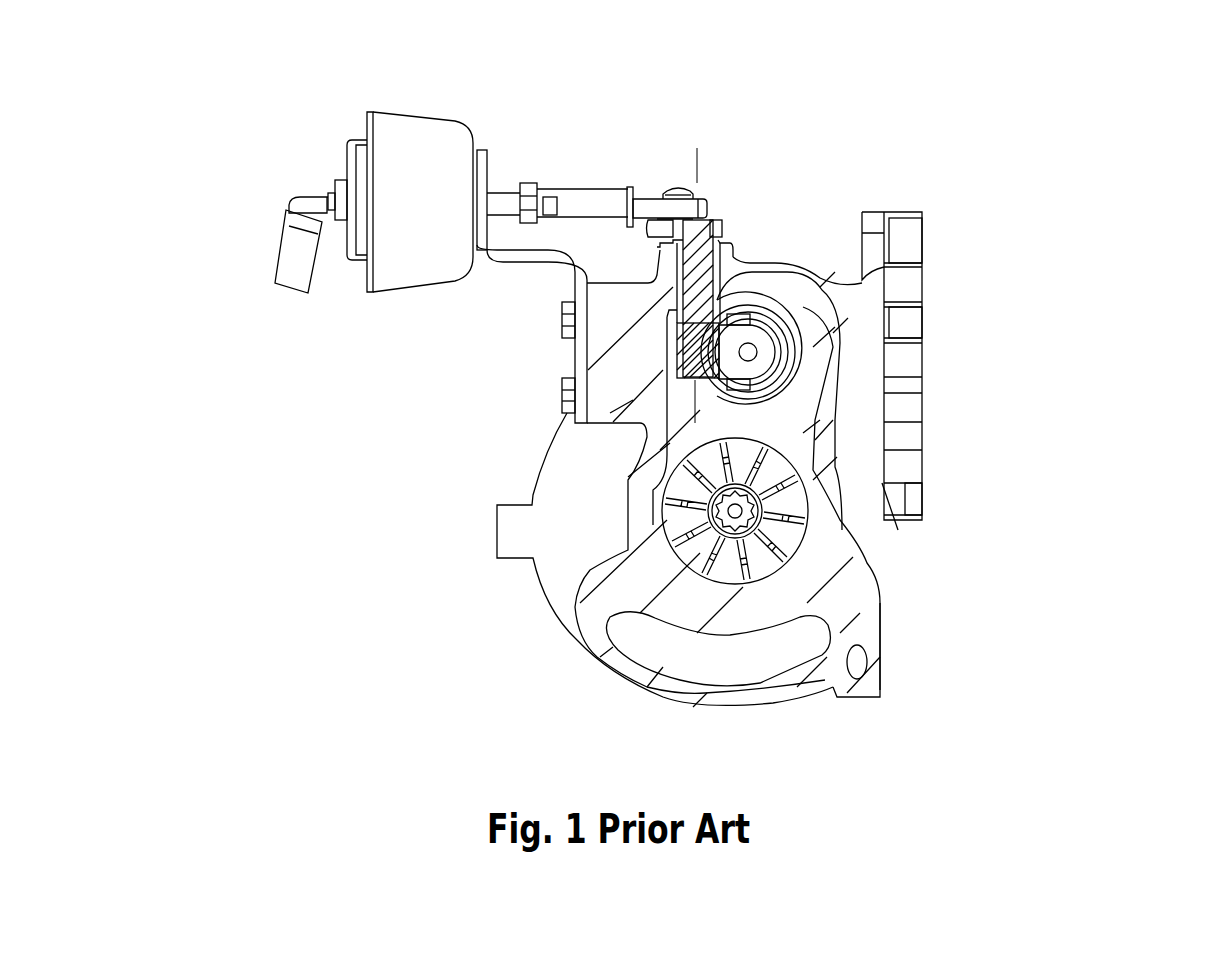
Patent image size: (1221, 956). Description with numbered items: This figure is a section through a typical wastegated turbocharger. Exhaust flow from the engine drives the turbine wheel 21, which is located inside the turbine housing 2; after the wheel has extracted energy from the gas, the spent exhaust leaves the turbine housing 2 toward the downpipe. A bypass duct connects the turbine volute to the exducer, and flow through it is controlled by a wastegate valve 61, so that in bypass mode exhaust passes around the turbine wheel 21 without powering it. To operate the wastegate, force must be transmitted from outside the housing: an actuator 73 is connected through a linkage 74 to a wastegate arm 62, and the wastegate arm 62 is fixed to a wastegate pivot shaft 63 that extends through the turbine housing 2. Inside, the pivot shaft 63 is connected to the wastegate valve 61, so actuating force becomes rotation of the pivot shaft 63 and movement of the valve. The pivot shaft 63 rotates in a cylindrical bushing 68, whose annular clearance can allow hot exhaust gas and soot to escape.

The turbine housing 2 is at (575, 500).
The turbine wheel 21 is at (773, 518).
The wastegate valve 61 is at (773, 369).
The wastegate pivot shaft 63 is at (722, 297).
The wastegate arm 62 is at (672, 285).
The cylindrical bushing 68 is at (671, 284).
The actuator 73 is at (332, 197).
The linkage 74 is at (680, 208).